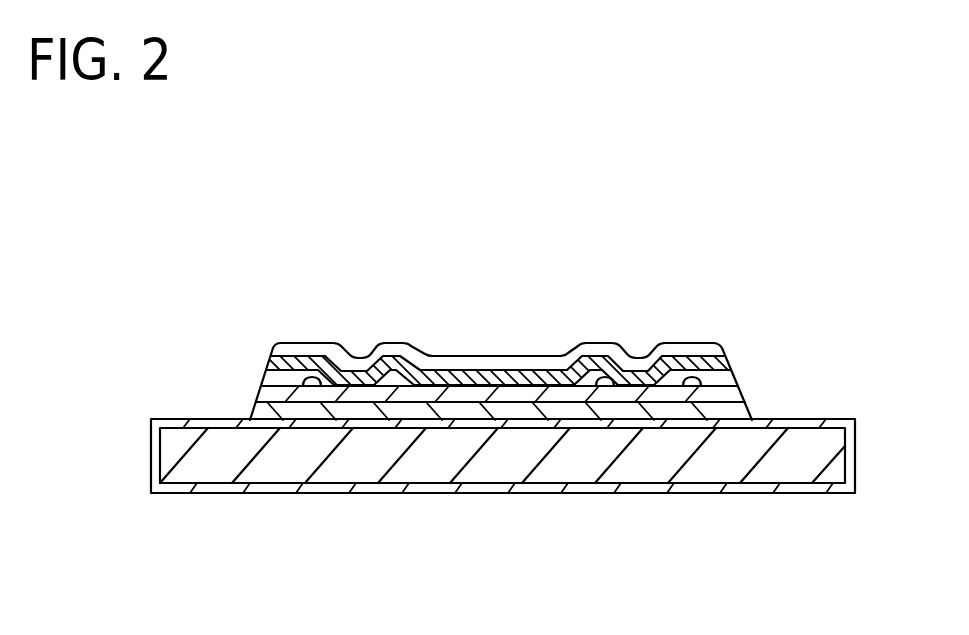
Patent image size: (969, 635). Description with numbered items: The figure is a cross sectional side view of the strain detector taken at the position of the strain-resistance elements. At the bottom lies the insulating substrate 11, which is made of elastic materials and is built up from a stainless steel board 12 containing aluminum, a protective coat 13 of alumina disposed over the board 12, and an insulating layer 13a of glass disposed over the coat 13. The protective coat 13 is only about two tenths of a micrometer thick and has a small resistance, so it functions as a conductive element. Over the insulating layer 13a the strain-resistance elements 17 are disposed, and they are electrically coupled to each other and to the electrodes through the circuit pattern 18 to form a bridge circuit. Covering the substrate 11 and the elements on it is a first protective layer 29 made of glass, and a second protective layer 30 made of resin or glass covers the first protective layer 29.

The insulating substrate 11 is at (592, 465).
The stainless steel board 12 is at (512, 462).
The protective coat 13 is at (847, 420).
The insulating layer 13a is at (440, 412).
The strain-resistance elements 17 is at (334, 392).
The circuit pattern 18 is at (458, 395).
The first protective layer 29 is at (729, 368).
The second protective layer 30 is at (717, 341).